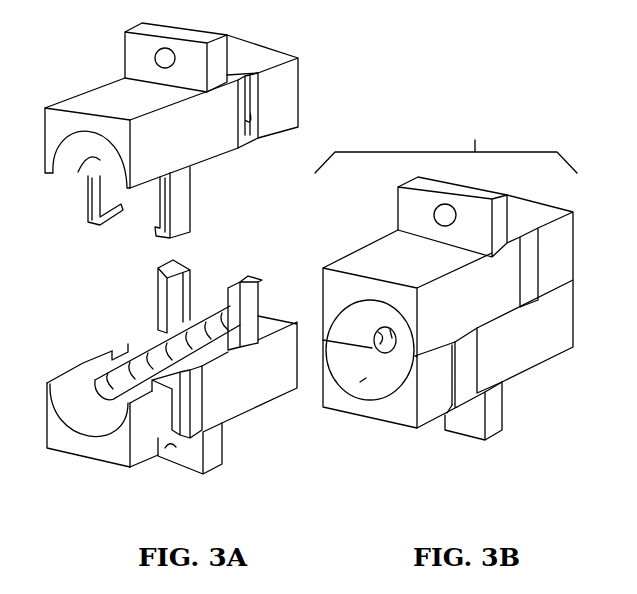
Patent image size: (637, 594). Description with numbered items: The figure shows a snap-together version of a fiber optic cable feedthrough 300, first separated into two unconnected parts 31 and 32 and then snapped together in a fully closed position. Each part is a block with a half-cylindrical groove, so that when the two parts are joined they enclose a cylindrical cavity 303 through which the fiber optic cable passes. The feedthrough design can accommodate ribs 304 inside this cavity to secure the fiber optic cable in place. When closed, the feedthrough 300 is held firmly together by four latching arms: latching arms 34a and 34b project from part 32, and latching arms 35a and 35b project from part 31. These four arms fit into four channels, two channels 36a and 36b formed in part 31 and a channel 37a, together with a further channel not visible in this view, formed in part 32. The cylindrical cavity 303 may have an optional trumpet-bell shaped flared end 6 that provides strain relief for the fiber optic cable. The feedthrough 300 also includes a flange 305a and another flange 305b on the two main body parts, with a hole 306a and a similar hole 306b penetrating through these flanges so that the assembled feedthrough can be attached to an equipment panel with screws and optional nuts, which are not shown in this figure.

In FIG. 3B, the fiber optic cable feedthrough 300 is at (446, 148).
In FIG. 3A, the part 31 is at (103, 457).
In FIG. 3B, the part 31 is at (365, 422).
In FIG. 3A, the part 32 is at (75, 92).
In FIG. 3B, the part 32 is at (347, 258).
In FIG. 3B, the cylindrical cavity 303 is at (376, 342).
In FIG. 3A, the ribs 304 is at (98, 160).
In FIG. 3A, the flange 305a is at (228, 455).
In FIG. 3B, the flange 305a is at (503, 410).
In FIG. 3A, the flange 305b is at (125, 60).
In FIG. 3B, the flange 305b is at (398, 196).
In FIG. 3B, the hole 306a is at (447, 413).
In FIG. 3B, the hole 306b is at (436, 220).
In FIG. 3A, the latching arm 34a is at (88, 193).
In FIG. 3A, the latching arm 34b is at (190, 195).
In FIG. 3A, the latching arm 35a is at (158, 293).
In FIG. 3A, the latching arm 35b is at (260, 303).
In FIG. 3A, the channel 36a is at (108, 362).
In FIG. 3A, the channel 36b is at (173, 398).
In FIG. 3A, the channel 37a is at (247, 123).
In FIG. 3B, the trumpet-bell shaped flared end 6 is at (363, 380).